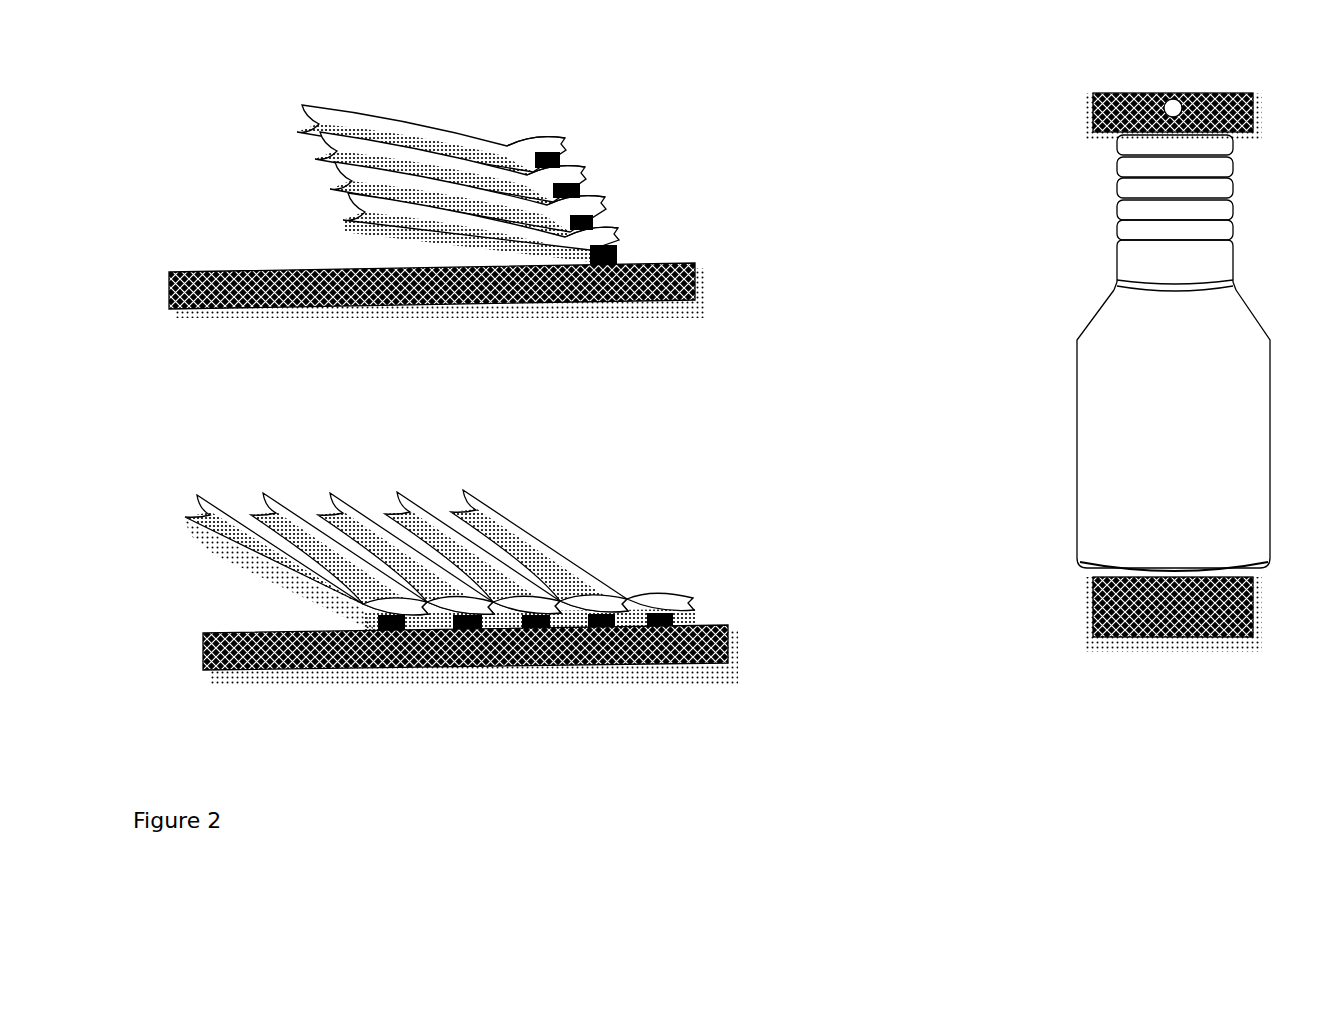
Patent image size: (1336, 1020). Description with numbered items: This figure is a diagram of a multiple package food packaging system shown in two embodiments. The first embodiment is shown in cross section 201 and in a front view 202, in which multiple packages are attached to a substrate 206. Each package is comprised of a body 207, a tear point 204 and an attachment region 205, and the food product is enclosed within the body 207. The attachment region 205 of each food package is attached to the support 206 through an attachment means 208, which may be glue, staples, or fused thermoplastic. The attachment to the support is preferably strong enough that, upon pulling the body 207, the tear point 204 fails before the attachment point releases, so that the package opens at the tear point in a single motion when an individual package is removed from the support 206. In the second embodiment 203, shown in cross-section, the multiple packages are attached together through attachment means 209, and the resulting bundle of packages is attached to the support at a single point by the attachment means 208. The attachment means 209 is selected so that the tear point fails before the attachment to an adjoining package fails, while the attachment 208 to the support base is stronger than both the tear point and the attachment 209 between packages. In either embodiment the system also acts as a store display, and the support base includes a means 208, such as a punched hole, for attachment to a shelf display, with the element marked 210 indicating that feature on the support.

The cross section of first embodiment 201 is at (497, 763).
The front view of first embodiment 202 is at (1200, 685).
The second embodiment 203 is at (415, 395).
The tear point 204 is at (630, 596).
The attachment region 205 is at (672, 588).
The substrate 206 is at (545, 303).
The body 207 is at (555, 541).
The attachment means 208 is at (622, 250).
The attachment means between packages 209 is at (590, 190).
The top strip with hole 210 is at (1176, 92).